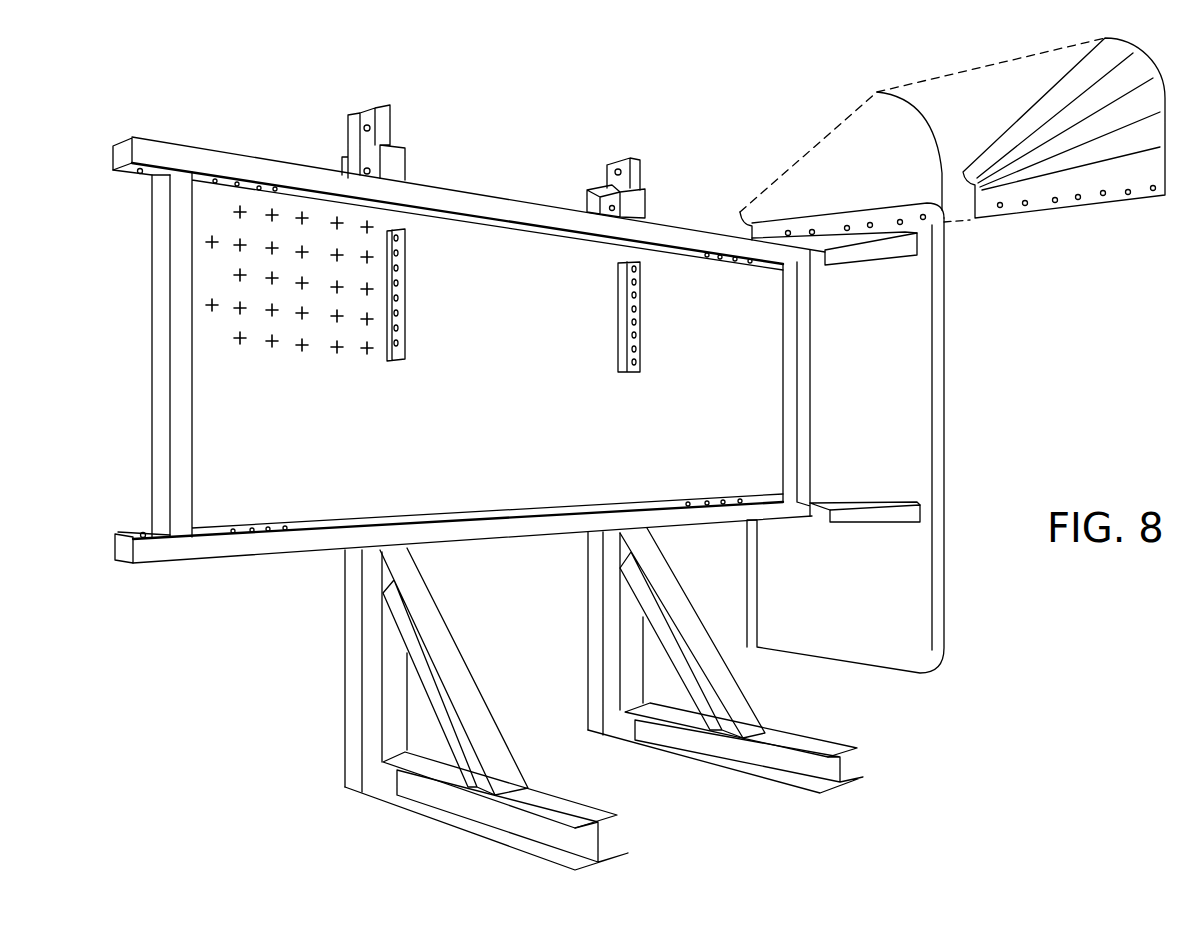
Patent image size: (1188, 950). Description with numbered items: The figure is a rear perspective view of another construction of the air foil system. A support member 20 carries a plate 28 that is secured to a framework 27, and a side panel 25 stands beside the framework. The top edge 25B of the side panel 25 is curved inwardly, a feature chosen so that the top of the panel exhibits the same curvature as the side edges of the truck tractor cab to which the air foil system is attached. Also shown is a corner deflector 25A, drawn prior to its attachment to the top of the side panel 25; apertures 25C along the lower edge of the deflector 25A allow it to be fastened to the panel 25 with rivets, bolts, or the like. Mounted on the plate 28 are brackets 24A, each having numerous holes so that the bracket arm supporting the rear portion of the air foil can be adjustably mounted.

The support member 20 is at (340, 596).
The brackets 24A is at (623, 310).
The side panel 25 is at (945, 357).
The corner deflector 25A is at (1060, 80).
The top edge 25B is at (837, 210).
The apertures 25C is at (1077, 200).
The framework 27 is at (223, 547).
The plate 28 is at (200, 385).